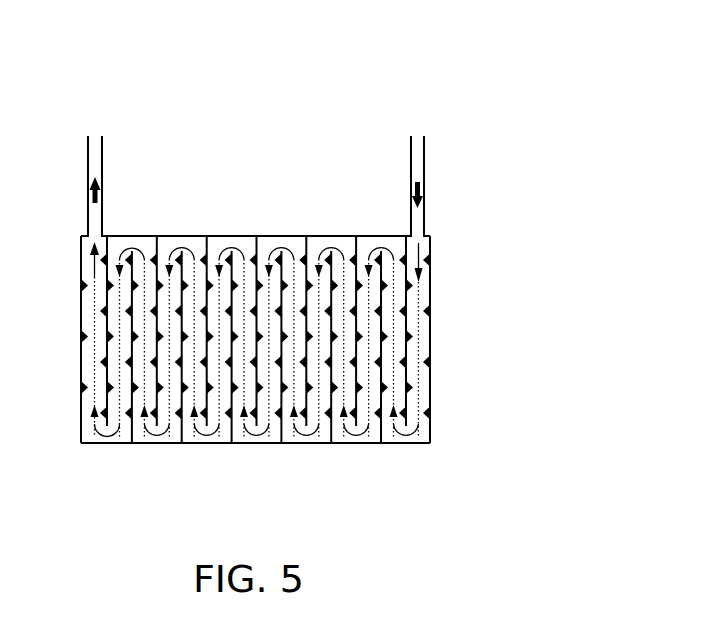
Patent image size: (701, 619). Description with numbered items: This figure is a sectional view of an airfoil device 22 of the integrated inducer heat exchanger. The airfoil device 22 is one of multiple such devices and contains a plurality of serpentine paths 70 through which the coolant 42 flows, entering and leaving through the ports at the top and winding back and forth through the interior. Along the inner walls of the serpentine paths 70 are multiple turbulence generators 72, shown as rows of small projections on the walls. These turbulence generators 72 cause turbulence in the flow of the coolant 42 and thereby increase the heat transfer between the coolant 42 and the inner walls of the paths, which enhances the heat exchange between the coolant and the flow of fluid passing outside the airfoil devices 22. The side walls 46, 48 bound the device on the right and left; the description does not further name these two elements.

The airfoil device 22 is at (524, 73).
The coolant 42 is at (100, 188).
The housing side wall 46 is at (430, 280).
The housing side wall 48 is at (80, 312).
The serpentine paths 70 is at (252, 437).
The turbulence generators 72 is at (410, 398).